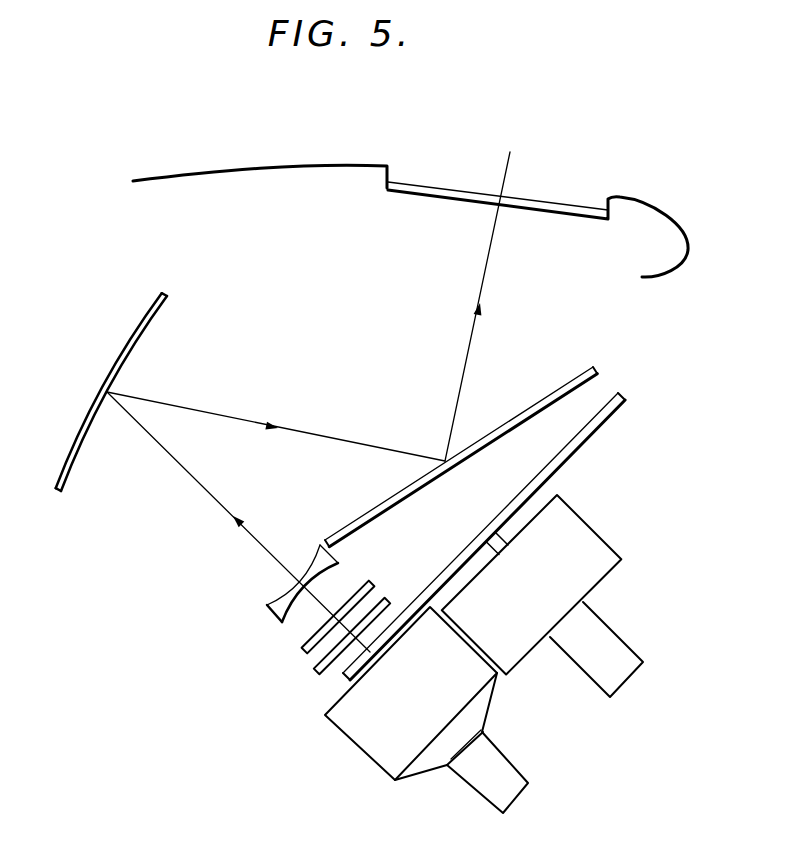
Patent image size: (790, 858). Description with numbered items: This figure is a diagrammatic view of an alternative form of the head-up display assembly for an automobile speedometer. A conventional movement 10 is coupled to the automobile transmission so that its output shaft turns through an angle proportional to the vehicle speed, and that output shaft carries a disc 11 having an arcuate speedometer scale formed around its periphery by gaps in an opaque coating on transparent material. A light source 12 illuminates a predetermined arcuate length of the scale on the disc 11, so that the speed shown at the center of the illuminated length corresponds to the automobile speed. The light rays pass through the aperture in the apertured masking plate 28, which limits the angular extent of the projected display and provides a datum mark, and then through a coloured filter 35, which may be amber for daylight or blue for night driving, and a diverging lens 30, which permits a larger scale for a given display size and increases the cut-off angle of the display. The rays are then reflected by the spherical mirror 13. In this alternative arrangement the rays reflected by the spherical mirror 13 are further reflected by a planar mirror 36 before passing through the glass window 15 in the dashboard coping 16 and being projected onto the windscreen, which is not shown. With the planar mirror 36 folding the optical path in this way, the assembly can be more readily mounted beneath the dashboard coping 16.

The movement 10 is at (592, 523).
The disc 11 is at (594, 430).
The light source 12 is at (365, 753).
The spherical mirror 13 is at (134, 343).
The glass window 15 is at (545, 207).
The dashboard coping 16 is at (217, 172).
The apertured masking plate 28 is at (318, 672).
The diverging lens 30 is at (268, 607).
The coloured filter 35 is at (302, 652).
The planar mirror 36 is at (538, 405).